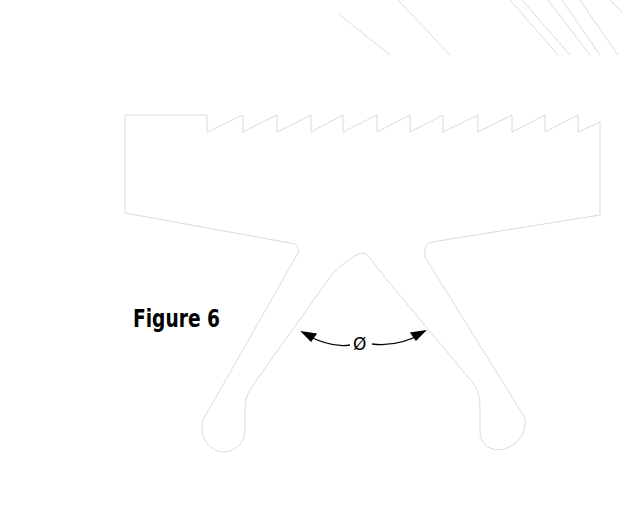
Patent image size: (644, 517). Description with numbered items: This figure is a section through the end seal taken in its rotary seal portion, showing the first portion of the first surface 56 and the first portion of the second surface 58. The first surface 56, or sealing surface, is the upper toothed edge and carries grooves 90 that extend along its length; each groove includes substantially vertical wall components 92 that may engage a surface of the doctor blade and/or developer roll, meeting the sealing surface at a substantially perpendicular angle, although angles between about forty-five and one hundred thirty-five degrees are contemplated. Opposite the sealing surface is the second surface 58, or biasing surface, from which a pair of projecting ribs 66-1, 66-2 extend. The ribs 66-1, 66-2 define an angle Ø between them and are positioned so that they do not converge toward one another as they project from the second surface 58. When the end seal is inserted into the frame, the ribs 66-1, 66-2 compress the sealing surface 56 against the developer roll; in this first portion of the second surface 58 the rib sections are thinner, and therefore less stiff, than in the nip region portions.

The first surface 56 is at (178, 115).
The second surface 58 is at (520, 230).
The grooves 90 is at (403, 72).
The vertical wall components 92 is at (210, 120).
The projecting rib 66-1 is at (485, 353).
The projecting rib 66-2 is at (253, 385).